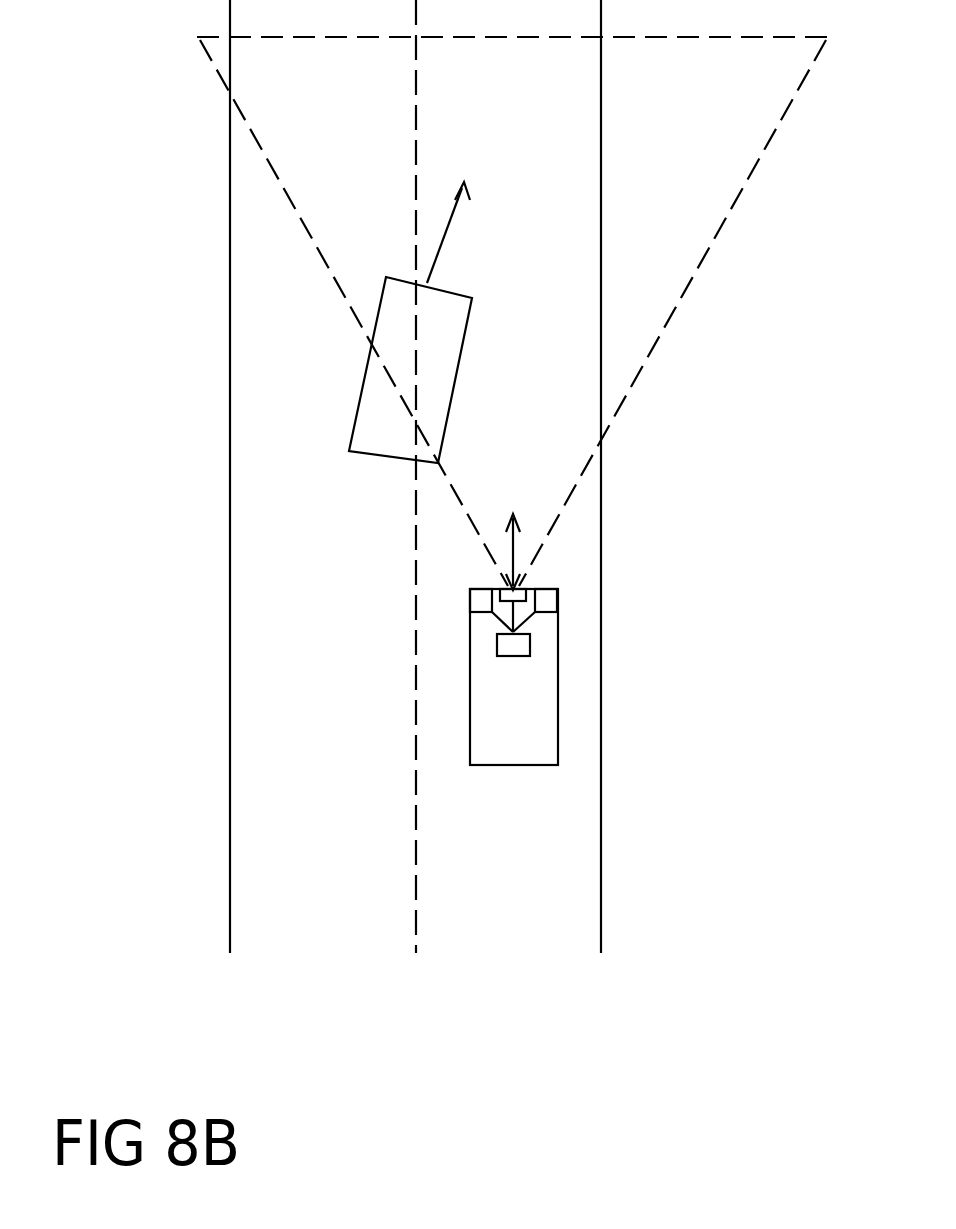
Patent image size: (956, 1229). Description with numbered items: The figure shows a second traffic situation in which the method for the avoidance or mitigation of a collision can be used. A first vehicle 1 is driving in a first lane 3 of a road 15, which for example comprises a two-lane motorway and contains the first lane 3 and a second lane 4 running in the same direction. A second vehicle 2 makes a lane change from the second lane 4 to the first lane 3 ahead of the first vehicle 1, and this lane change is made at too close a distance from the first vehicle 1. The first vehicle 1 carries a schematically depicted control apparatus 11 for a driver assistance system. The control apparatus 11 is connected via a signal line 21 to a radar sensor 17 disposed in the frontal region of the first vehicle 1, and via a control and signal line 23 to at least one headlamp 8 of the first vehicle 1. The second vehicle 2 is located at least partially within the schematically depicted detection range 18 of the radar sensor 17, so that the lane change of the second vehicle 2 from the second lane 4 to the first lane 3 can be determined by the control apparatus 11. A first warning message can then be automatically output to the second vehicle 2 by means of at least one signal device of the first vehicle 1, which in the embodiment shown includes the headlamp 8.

The first vehicle 1 is at (512, 745).
The second vehicle 2 is at (366, 438).
The first lane 3 is at (586, 862).
The second lane 4 is at (246, 854).
The headlamp 8 is at (482, 602).
The control apparatus 11 is at (508, 645).
The road 15 is at (372, 1002).
The radar sensor 17 is at (500, 590).
The detection range 18 is at (700, 248).
The signal line 21 is at (530, 590).
The control and signal line 23 is at (486, 614).